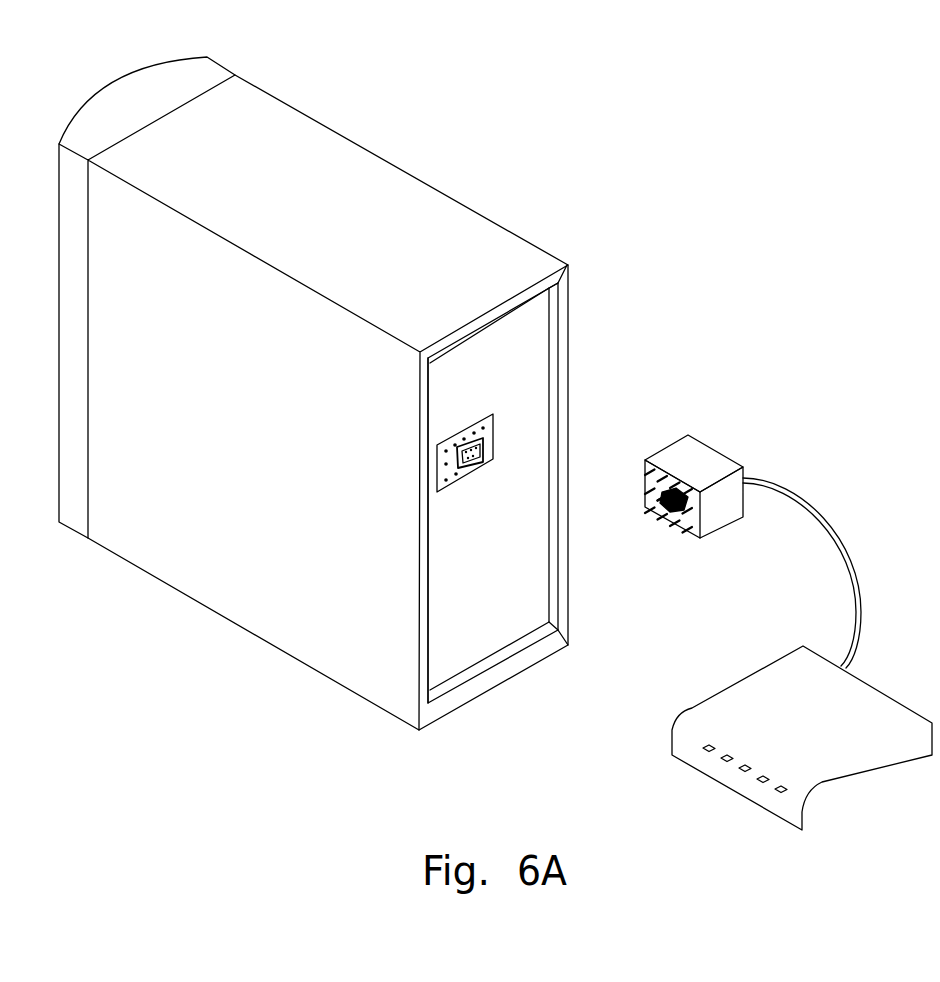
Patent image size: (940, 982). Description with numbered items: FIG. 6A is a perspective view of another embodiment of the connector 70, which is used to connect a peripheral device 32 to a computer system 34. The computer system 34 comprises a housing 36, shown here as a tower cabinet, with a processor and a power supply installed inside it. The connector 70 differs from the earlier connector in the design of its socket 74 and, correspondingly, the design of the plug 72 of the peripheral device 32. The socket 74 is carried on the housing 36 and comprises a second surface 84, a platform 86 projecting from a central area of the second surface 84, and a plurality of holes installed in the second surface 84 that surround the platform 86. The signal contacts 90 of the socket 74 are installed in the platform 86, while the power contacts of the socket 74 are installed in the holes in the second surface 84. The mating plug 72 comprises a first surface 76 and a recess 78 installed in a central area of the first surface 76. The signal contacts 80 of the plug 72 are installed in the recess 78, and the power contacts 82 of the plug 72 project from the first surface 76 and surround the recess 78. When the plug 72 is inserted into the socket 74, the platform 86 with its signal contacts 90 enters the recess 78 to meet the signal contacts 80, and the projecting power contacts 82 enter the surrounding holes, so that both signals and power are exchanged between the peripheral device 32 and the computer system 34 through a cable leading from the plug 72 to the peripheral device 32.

The peripheral device 32 is at (860, 778).
The computer system 34 is at (597, 213).
The housing 36 is at (368, 167).
The connector 70 is at (502, 490).
The plug 72 is at (722, 435).
The socket 74 is at (453, 460).
The first surface 76 is at (647, 470).
The recess 78 is at (681, 507).
The signal contacts 80 is at (662, 515).
The power contacts 82 is at (670, 526).
The second surface 84 is at (495, 416).
The platform 86 is at (484, 455).
The signal contacts 90 is at (472, 468).